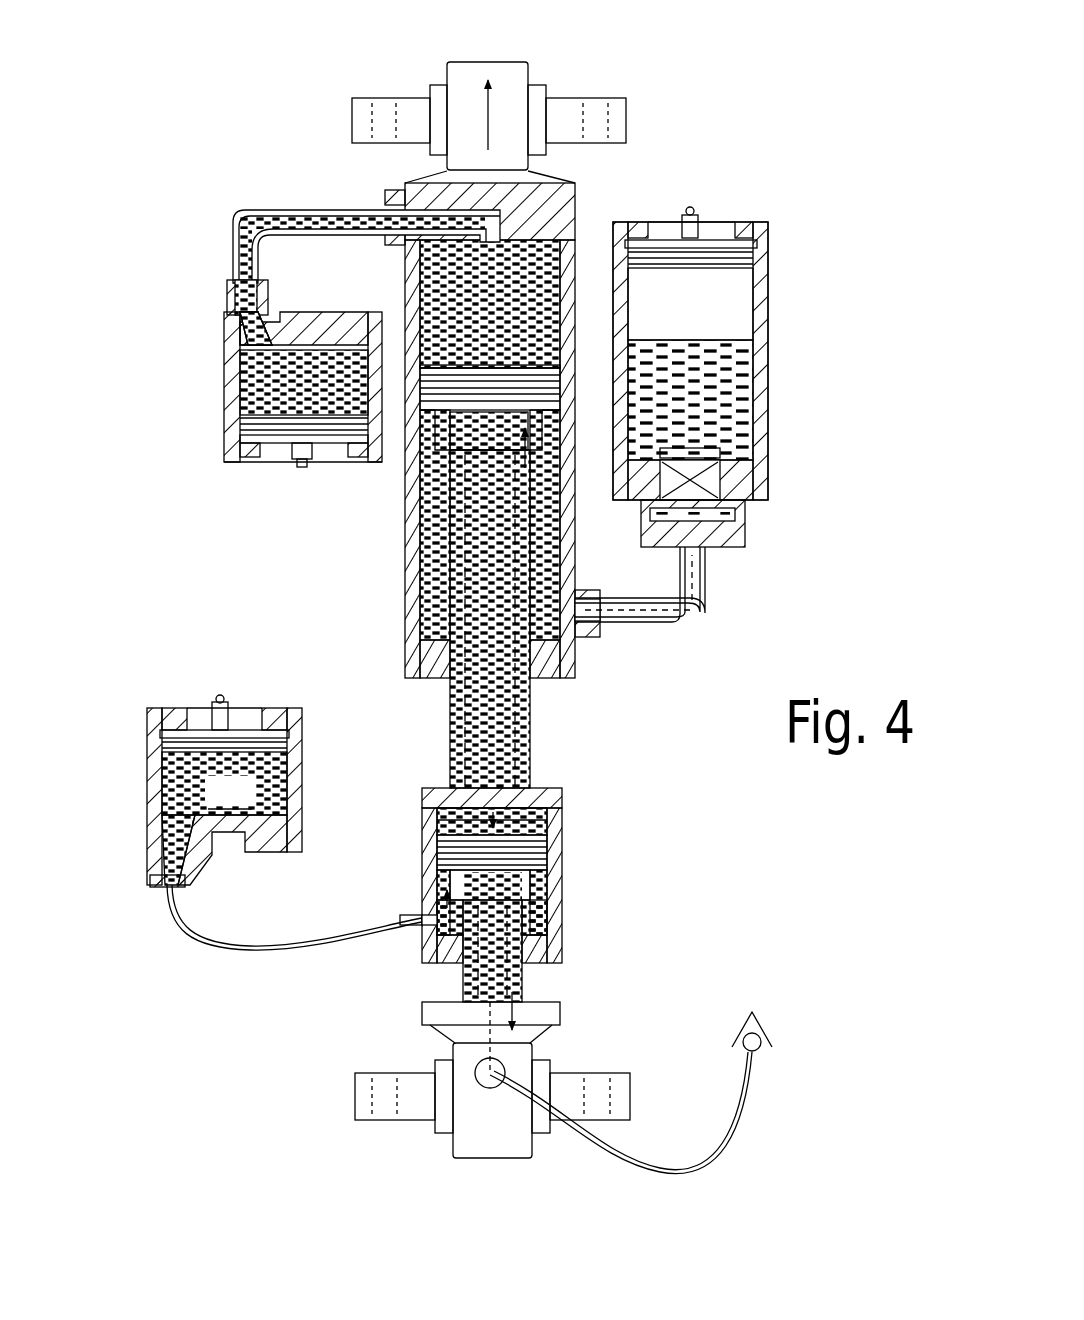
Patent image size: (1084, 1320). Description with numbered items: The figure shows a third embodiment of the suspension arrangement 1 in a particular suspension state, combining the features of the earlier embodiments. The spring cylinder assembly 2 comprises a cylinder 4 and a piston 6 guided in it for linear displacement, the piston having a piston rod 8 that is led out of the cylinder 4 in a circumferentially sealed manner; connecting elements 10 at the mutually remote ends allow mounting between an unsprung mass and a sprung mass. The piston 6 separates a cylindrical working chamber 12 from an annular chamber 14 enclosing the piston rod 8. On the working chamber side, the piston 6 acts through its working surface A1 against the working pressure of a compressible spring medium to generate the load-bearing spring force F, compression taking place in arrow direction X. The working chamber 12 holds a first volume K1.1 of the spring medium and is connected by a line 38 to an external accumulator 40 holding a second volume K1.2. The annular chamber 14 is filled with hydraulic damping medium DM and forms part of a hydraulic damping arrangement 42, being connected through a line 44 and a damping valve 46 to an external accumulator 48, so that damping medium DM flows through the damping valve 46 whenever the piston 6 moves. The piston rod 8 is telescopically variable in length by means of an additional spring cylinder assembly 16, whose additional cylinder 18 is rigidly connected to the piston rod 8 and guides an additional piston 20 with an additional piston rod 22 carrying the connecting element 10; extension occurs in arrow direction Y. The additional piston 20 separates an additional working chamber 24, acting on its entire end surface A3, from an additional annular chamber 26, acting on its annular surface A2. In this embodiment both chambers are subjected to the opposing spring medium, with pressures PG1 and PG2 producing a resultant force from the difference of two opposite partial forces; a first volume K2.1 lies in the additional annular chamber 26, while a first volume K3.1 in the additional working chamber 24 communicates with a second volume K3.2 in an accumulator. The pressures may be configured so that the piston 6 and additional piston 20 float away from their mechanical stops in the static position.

The suspension arrangement 1 is at (757, 787).
The spring cylinder assembly 2 is at (407, 680).
The cylinder 4 is at (412, 542).
The piston 6 is at (447, 408).
The piston rod 8 is at (525, 690).
The connecting elements 10 is at (553, 88).
The working chamber 12 is at (535, 262).
The annular chamber 14 is at (555, 572).
The additional spring cylinder assembly 16 is at (570, 788).
The additional cylinder 18 is at (555, 848).
The additional piston 20 is at (555, 875).
The additional piston rod 22 is at (465, 976).
The additional working chamber 24 is at (450, 812).
The additional annular chamber 26 is at (437, 875).
The line 38 is at (233, 228).
The accumulator 40 is at (223, 447).
The hydraulic damping arrangement 42 is at (788, 528).
The line 44 is at (675, 605).
The damping valve 46 is at (745, 470).
The accumulator 48 is at (770, 350).
The first volume of spring medium K1.1 is at (462, 292).
The second volume of spring medium K1.2 is at (268, 385).
The first volume of opposing spring medium K2.1 is at (555, 915).
The first volume of opposing spring medium K3.1 is at (565, 825).
The second volume of opposing spring medium K3.2 is at (180, 772).
The working surface A1 is at (507, 366).
The annular surface A2 is at (437, 900).
The end surface A3 is at (437, 828).
The counterpressure PG1 is at (440, 925).
The counterpressure PG2 is at (520, 800).
The hydraulic damping medium DM is at (432, 595).
The spring force F is at (488, 110).
The compression direction X is at (555, 468).
The extension direction Y is at (520, 1008).